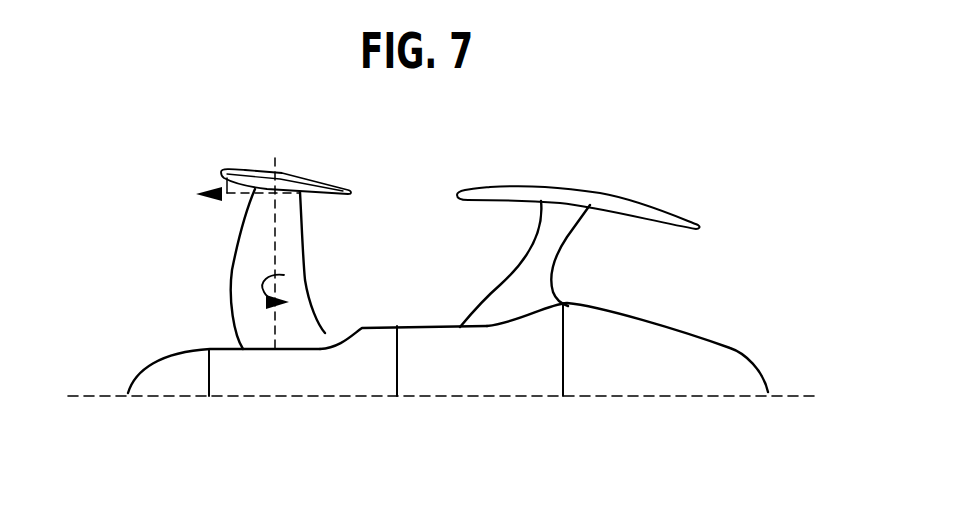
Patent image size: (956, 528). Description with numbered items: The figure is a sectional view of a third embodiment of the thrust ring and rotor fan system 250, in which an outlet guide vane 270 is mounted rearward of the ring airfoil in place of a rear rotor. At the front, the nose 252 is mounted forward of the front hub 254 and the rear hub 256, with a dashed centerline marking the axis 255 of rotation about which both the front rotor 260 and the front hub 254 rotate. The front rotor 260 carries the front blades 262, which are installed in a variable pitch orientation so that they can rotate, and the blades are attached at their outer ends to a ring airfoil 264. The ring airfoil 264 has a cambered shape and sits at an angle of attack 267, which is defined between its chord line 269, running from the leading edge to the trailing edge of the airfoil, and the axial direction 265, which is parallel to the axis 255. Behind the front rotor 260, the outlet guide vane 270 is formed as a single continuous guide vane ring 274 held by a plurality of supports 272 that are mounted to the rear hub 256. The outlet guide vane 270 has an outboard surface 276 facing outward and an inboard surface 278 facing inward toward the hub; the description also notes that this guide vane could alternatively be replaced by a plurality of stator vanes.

The thrust ring and rotor fan system 250 is at (591, 221).
The nose 252 is at (163, 387).
The front hub 254 is at (302, 383).
The axis of rotation 255 is at (73, 397).
The rear hub 256 is at (497, 385).
The front rotor 260 is at (244, 218).
The front blades 262 is at (230, 280).
The ring airfoil 264 is at (266, 176).
The axial direction 265 is at (236, 170).
The angle of attack 267 is at (227, 180).
The chord line 269 is at (265, 170).
The outlet guide vane 270 is at (568, 226).
The supports 272 is at (557, 263).
The guide vane ring 274 is at (520, 185).
The outboard surface 276 is at (640, 200).
The inboard surface 278 is at (683, 230).